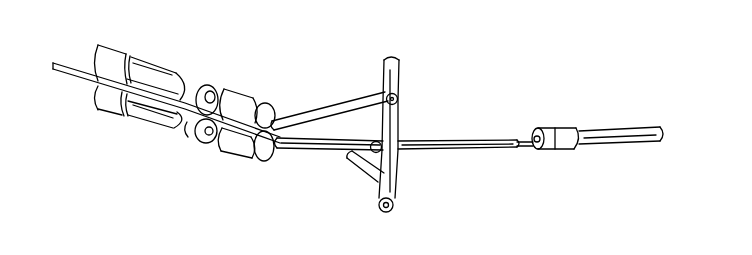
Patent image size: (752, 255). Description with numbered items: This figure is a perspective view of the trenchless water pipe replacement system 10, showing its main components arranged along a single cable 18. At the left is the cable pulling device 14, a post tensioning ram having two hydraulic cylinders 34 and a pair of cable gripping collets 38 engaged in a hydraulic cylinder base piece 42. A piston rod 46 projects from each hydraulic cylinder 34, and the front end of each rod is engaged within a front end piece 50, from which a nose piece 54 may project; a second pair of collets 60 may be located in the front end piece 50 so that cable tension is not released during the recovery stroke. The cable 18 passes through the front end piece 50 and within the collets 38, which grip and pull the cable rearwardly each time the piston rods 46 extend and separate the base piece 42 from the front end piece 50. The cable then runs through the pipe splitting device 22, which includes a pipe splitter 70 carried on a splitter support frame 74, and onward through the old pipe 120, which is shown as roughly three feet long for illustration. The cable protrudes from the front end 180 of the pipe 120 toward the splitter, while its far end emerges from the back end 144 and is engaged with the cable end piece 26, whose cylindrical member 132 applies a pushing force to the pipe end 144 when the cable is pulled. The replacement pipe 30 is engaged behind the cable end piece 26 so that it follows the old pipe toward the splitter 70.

The trenchless water pipe replacement system 10 is at (434, 80).
The cable pulling device 14 is at (93, 152).
The cable 18 is at (62, 62).
The pipe splitting device 22 is at (341, 199).
The cable end piece 26 is at (545, 128).
The replacement pipe 30 is at (620, 127).
The hydraulic cylinders 34 is at (117, 48).
The cable gripping collets 38 is at (180, 130).
The hydraulic cylinder base piece 42 is at (219, 80).
The piston rod 46 is at (227, 93).
The front end piece 50 is at (263, 103).
The nose piece 54 is at (249, 152).
The second pair of collets 60 is at (227, 145).
The pipe splitter 70 is at (286, 152).
The splitter support frame 74 is at (399, 174).
The pipe 120 is at (444, 140).
The cylindrical member 132 is at (555, 150).
The end of the pipe 144 is at (511, 150).
The front end of the pipe 180 is at (376, 141).